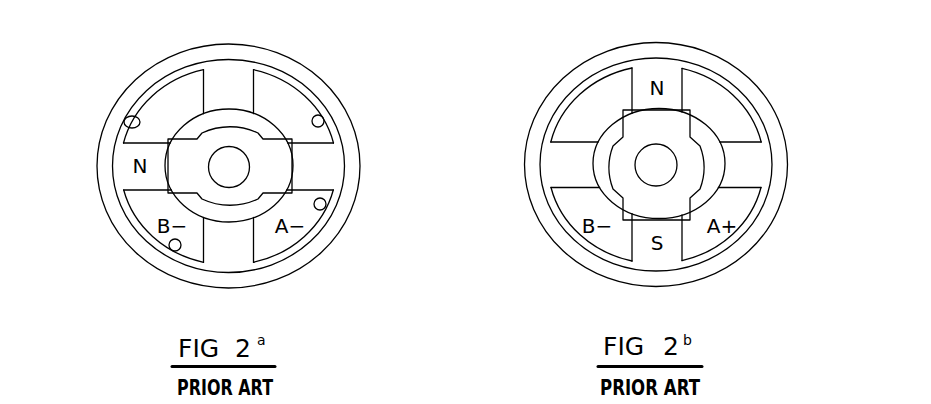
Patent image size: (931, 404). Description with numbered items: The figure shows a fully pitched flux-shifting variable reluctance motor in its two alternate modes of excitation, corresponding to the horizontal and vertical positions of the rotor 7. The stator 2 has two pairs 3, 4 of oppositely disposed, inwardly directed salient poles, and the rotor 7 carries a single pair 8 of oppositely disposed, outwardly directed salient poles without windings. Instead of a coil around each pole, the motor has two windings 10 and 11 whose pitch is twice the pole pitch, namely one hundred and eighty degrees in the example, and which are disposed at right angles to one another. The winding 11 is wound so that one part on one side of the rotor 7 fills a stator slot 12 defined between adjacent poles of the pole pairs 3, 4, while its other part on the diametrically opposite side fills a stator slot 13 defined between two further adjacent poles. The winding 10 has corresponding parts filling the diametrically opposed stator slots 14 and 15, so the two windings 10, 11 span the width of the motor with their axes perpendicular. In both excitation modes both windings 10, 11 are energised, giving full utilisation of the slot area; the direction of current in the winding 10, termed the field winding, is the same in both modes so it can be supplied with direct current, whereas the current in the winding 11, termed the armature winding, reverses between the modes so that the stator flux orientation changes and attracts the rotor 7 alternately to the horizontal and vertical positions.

In FIG. 2A, the stator 2 is at (322, 252).
In FIG. 2A, the pole pair 3 is at (327, 165).
In FIG. 2A, the pole pair 4 is at (228, 245).
In FIG. 2A, the rotor 7 is at (252, 129).
In FIG. 2A, the pair of salient poles 8 is at (268, 148).
In FIG. 2A, the winding 10 is at (268, 80).
In FIG. 2B, the winding 10 is at (693, 84).
In FIG. 2A, the winding 11 is at (190, 90).
In FIG. 2B, the winding 11 is at (615, 88).
In FIG. 2A, the stator slot 12 is at (124, 124).
In FIG. 2A, the stator slot 13 is at (326, 203).
In FIG. 2A, the stator slot 14 is at (324, 117).
In FIG. 2A, the stator slot 15 is at (171, 250).